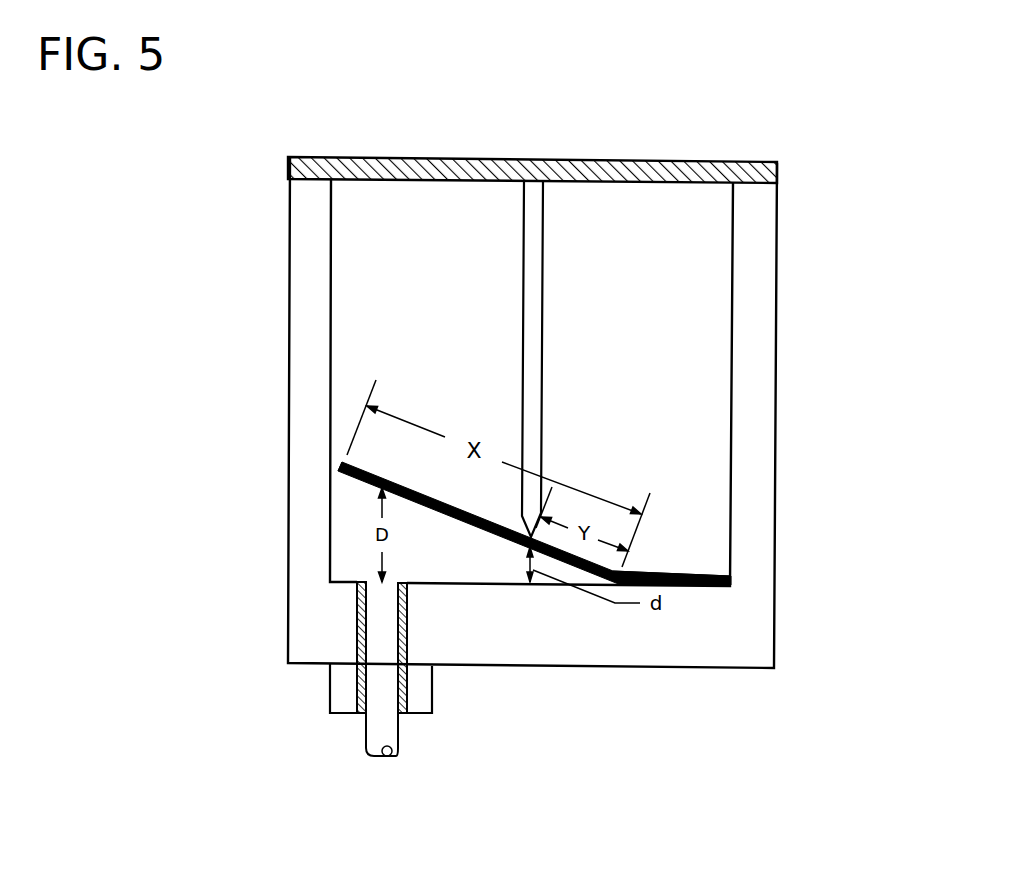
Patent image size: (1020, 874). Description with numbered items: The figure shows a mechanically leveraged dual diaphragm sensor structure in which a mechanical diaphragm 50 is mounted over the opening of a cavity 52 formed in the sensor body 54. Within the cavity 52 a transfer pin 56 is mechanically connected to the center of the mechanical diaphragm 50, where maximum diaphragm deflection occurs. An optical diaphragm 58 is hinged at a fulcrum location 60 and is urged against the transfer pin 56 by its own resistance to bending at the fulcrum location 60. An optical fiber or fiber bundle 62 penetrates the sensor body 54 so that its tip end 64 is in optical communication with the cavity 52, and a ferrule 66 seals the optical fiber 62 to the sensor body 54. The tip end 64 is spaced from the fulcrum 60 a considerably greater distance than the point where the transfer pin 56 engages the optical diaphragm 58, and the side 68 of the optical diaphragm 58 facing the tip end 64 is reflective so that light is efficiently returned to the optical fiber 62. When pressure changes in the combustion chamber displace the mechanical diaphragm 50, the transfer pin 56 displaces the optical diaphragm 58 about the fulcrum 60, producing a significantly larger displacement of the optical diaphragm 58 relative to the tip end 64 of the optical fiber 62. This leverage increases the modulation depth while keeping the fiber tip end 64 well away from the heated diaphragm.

The mechanical diaphragm 50 is at (690, 165).
The cavity 52 is at (688, 262).
The sensor body 54 is at (310, 253).
The transfer pin 56 is at (532, 232).
The optical diaphragm 58 is at (380, 477).
The fulcrum location 60 is at (620, 571).
The optical fiber 62 is at (363, 727).
The tip end 64 is at (373, 578).
The ferrule 66 is at (407, 670).
The side of the optical diaphragm 68 is at (367, 480).